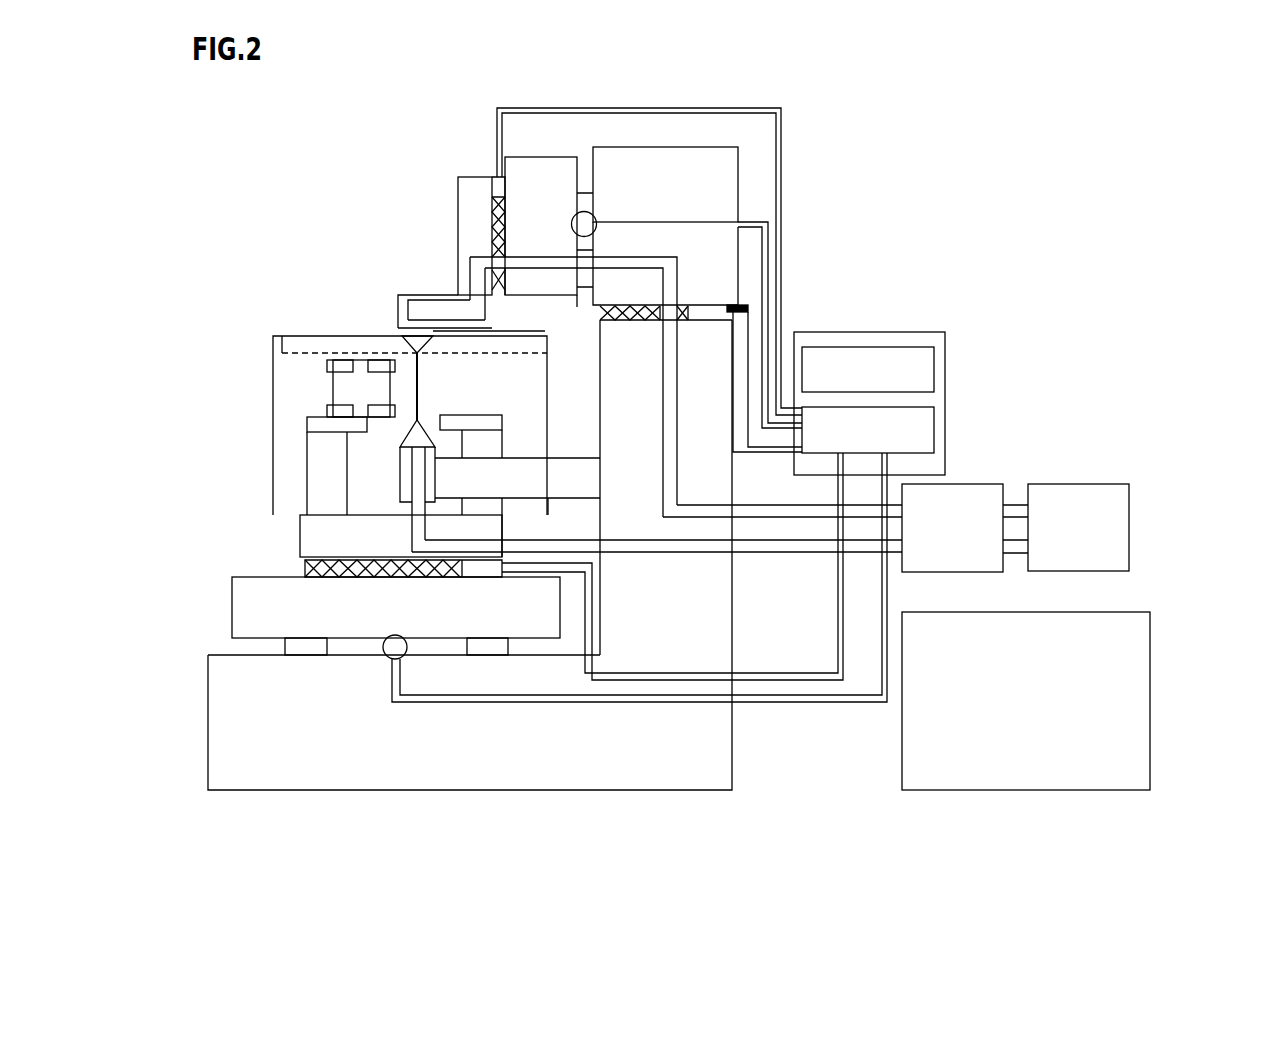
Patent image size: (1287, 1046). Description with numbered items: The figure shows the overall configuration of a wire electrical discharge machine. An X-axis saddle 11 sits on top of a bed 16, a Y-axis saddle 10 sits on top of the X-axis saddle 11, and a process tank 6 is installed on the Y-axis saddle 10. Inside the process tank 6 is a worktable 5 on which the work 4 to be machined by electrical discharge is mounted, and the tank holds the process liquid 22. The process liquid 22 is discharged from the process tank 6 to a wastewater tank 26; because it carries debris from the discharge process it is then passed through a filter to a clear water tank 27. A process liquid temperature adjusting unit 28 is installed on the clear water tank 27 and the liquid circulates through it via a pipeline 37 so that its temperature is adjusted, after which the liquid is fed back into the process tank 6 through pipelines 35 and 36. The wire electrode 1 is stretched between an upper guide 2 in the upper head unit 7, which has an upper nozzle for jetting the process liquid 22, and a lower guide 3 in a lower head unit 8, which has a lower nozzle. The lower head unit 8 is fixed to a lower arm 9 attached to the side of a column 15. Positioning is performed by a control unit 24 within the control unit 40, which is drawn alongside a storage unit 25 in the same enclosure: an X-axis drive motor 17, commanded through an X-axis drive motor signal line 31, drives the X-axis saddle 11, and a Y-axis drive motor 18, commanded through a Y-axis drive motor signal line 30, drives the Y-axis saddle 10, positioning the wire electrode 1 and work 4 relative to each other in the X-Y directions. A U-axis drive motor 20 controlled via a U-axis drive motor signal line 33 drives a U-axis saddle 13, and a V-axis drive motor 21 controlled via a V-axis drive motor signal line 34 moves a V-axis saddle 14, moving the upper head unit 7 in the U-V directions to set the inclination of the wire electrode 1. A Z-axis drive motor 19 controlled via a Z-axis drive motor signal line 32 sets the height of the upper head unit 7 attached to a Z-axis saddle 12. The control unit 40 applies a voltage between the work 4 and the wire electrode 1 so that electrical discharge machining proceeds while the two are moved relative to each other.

The wire electrode 1 is at (419, 375).
The upper guide 2 is at (403, 334).
The lower guide 3 is at (403, 436).
The work 4 is at (328, 366).
The worktable 5 is at (307, 425).
The process tank 6 is at (273, 472).
The upper head unit 7 is at (418, 295).
The lower head unit 8 is at (400, 473).
The lower arm 9 is at (514, 457).
The Y-axis saddle 10 is at (300, 540).
The X-axis saddle 11 is at (232, 600).
The Z-axis saddle 12 is at (457, 225).
The U-axis saddle 13 is at (513, 163).
The V-axis saddle 14 is at (738, 172).
The column 15 is at (599, 393).
The bed 16 is at (733, 767).
The X-axis drive motor 17 is at (386, 658).
The Y-axis drive motor 18 is at (503, 562).
The Z-axis drive motor 19 is at (497, 195).
The U-axis drive motor 20 is at (584, 155).
The V-axis drive motor 21 is at (750, 307).
The process liquid 22 is at (282, 350).
The control unit 24 is at (935, 425).
The storage unit 25 is at (935, 366).
The wastewater tank 26 is at (1151, 688).
The clear water tank 27 is at (985, 572).
The process liquid temperature adjusting unit 28 is at (1130, 535).
The Y-axis drive motor signal line 30 is at (837, 628).
The X-axis drive motor signal line 31 is at (835, 703).
The Z-axis drive motor signal line 32 is at (781, 118).
The U-axis drive motor signal line 33 is at (781, 245).
The V-axis drive motor signal line 34 is at (768, 453).
The pipeline 35 is at (708, 504).
The pipeline 36 is at (776, 554).
The pipeline 37 is at (1015, 503).
The control unit 40 is at (947, 332).